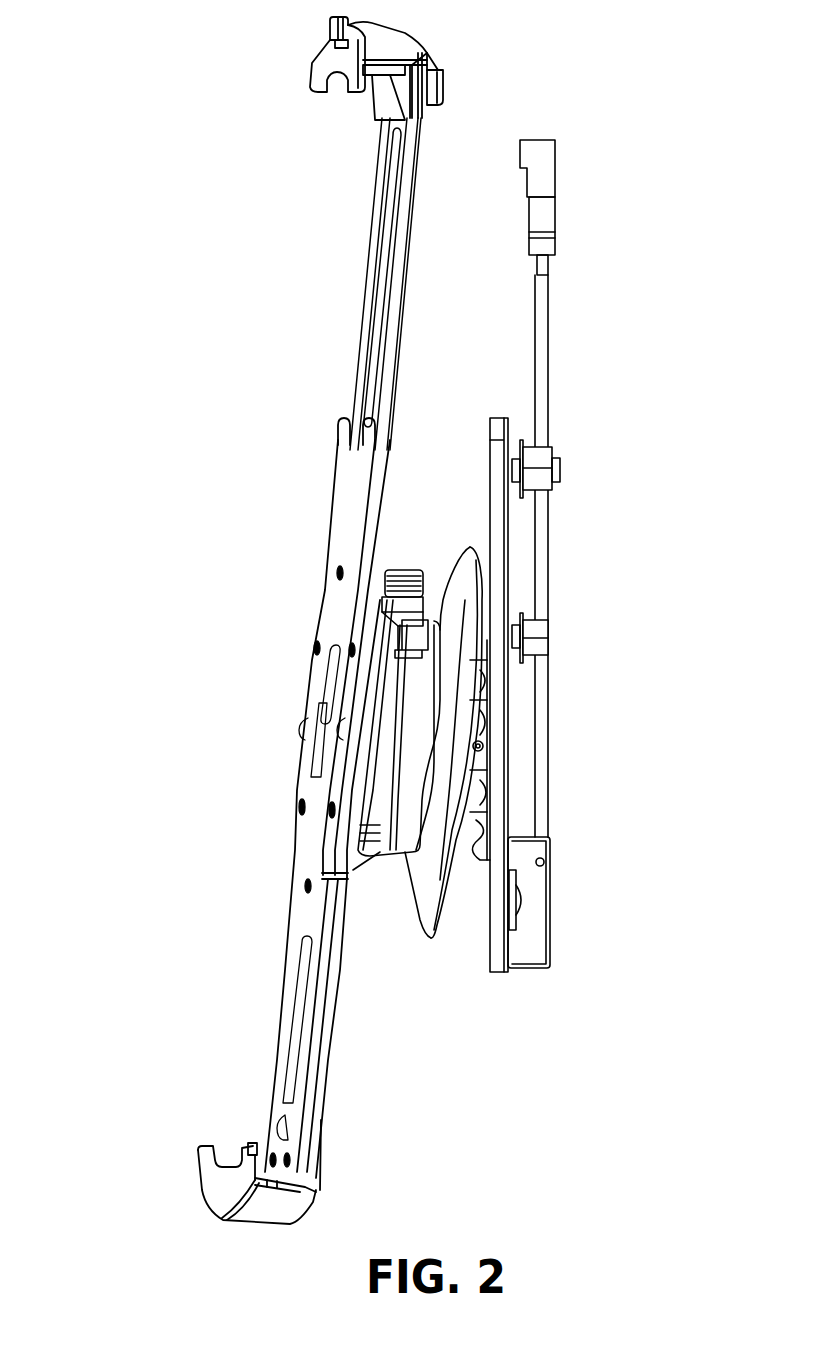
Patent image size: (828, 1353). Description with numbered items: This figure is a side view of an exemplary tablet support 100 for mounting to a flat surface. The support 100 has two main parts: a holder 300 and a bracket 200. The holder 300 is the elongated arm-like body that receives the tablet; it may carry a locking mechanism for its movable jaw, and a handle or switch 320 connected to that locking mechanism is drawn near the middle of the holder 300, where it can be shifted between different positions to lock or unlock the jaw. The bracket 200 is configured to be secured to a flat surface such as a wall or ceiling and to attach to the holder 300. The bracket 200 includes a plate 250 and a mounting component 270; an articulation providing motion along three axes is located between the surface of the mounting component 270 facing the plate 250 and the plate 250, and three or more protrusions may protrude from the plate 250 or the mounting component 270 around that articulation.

The support 100 is at (150, 153).
The bracket 200 is at (418, 898).
The plate 250 is at (493, 457).
The mounting component 270 is at (470, 578).
The holder 300 is at (330, 556).
The handle or switch 320 is at (407, 568).